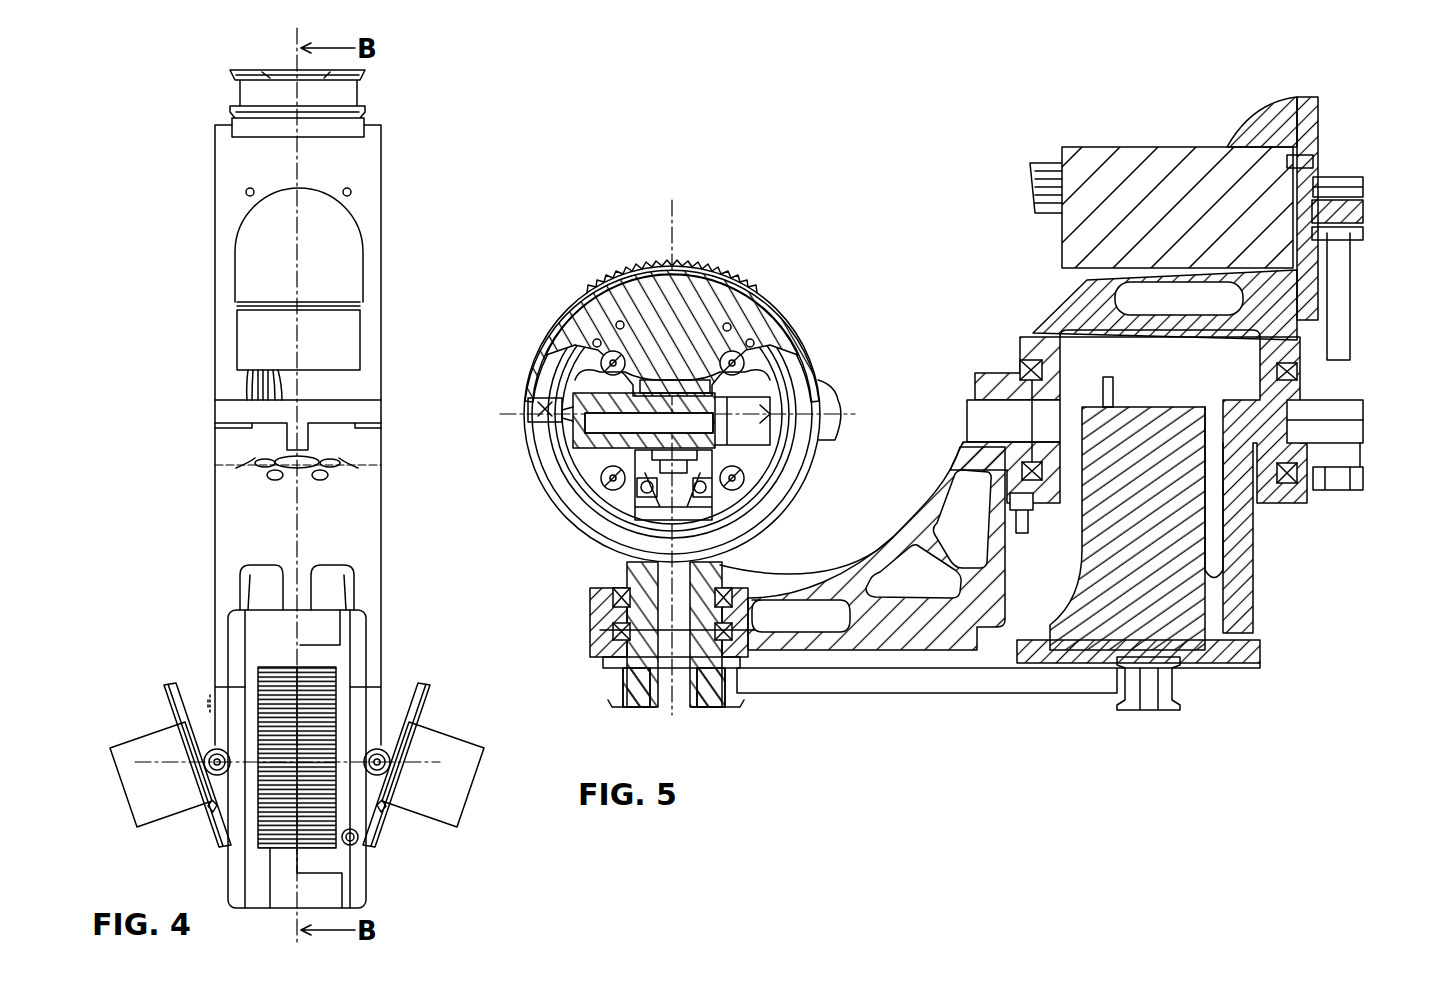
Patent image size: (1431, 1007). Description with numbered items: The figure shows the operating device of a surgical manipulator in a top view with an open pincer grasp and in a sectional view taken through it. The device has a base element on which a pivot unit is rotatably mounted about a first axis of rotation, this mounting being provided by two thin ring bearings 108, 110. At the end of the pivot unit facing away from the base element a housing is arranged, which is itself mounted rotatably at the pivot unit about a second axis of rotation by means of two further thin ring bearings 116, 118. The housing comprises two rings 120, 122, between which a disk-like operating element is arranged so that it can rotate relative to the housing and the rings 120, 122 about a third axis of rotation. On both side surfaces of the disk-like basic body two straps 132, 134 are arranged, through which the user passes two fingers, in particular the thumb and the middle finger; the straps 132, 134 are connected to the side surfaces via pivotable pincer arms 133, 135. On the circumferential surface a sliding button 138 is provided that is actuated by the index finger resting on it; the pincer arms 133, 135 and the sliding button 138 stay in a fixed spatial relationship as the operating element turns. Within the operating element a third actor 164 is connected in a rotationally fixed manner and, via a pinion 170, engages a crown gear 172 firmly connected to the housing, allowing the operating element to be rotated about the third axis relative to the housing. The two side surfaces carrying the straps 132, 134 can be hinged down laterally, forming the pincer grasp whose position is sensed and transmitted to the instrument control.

In FIG. 5, the thin ring bearing 108 is at (1020, 370).
In FIG. 5, the thin ring bearing 110 is at (1297, 372).
In FIG. 5, the thin ring bearing 116 is at (733, 594).
In FIG. 5, the thin ring bearing 118 is at (727, 630).
In FIG. 4, the ring 120 is at (233, 640).
In FIG. 4, the ring 122 is at (362, 638).
In FIG. 4, the strap 132 is at (147, 790).
In FIG. 4, the pincer arm 133 is at (176, 708).
In FIG. 4, the strap 134 is at (440, 798).
In FIG. 4, the pincer arm 135 is at (418, 708).
In FIG. 5, the sliding button 138 is at (720, 268).
In FIG. 5, the third actor 164 is at (666, 403).
In FIG. 5, the pinion 170 is at (542, 407).
In FIG. 5, the crown gear 172 is at (563, 497).